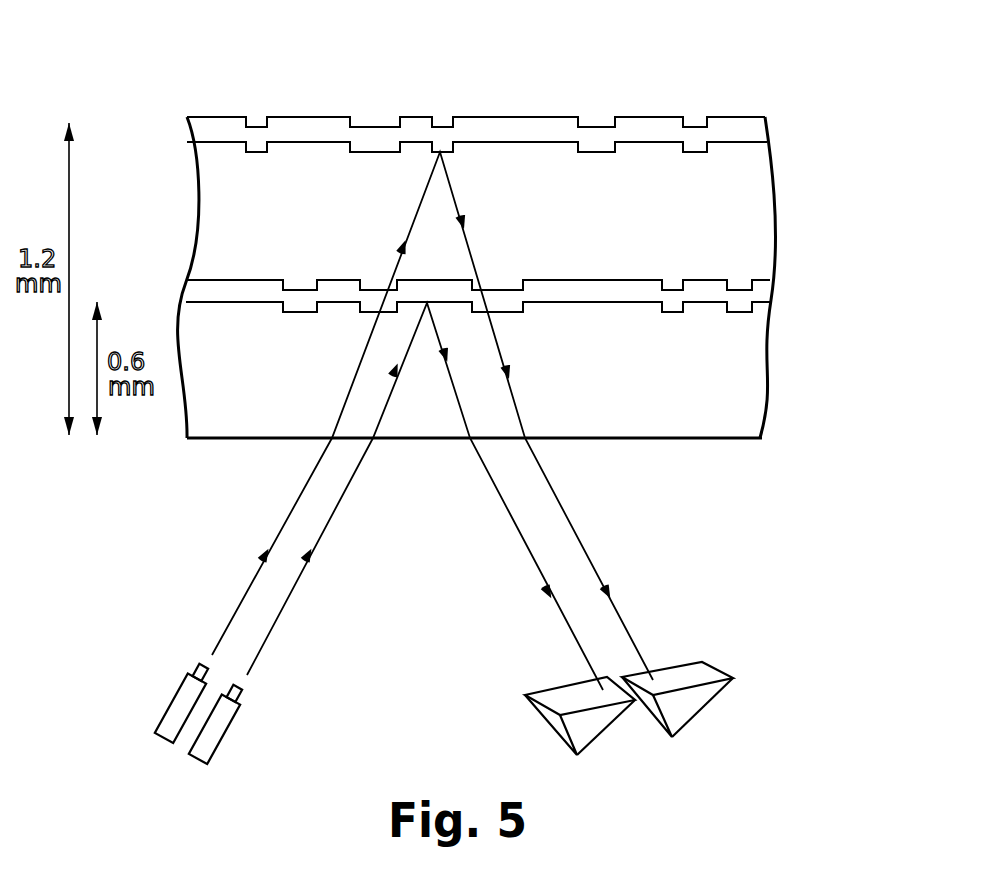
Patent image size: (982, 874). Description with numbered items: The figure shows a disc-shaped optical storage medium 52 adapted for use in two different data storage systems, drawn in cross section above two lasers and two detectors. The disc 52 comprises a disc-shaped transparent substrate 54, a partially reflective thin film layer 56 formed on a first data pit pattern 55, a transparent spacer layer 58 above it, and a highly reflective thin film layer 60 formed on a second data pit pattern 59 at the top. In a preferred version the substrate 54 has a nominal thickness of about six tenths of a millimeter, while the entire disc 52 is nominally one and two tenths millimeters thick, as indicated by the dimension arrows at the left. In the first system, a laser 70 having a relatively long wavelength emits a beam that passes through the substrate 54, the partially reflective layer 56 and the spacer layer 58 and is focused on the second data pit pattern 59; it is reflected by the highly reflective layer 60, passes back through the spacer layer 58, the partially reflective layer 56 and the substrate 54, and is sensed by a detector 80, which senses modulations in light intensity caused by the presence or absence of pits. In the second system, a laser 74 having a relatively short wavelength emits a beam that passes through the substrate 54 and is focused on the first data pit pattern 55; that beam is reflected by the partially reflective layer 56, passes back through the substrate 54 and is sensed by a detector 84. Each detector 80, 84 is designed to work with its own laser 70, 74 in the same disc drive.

The disc-shaped optical storage medium 52 is at (186, 422).
The transparent substrate 54 is at (740, 373).
The first data pit pattern 55 is at (232, 303).
The partially reflective thin film layer 56 is at (753, 293).
The transparent spacer layer 58 is at (743, 222).
The second data pit pattern 59 is at (222, 143).
The highly reflective thin film layer 60 is at (740, 127).
The laser 70 is at (188, 695).
The laser 74 is at (213, 728).
The detector 80 is at (692, 702).
The detector 84 is at (592, 730).